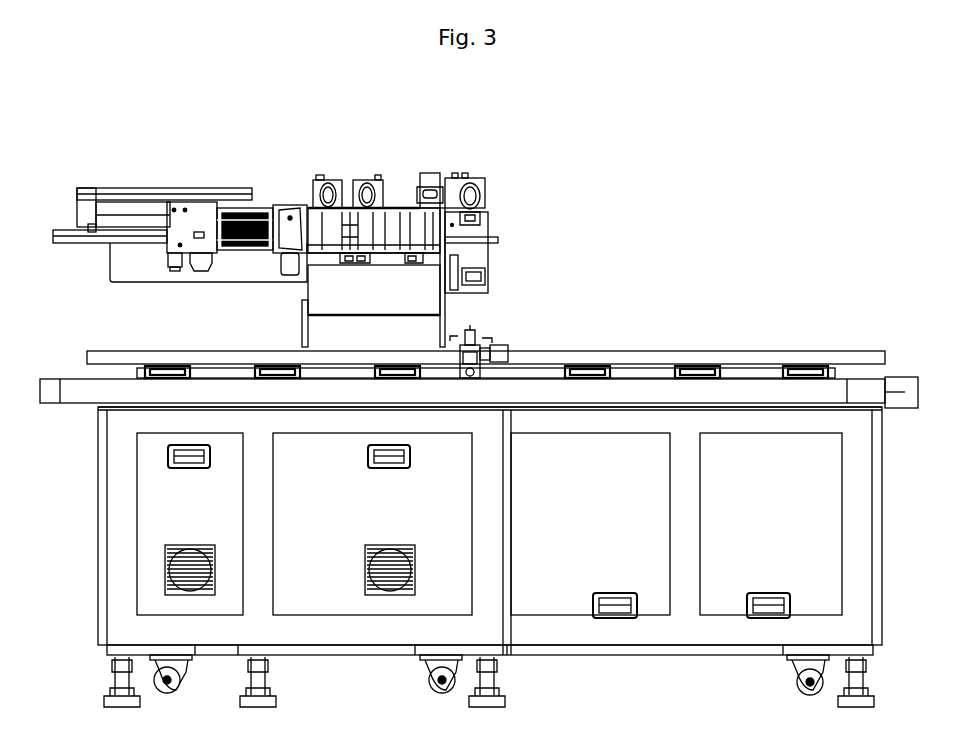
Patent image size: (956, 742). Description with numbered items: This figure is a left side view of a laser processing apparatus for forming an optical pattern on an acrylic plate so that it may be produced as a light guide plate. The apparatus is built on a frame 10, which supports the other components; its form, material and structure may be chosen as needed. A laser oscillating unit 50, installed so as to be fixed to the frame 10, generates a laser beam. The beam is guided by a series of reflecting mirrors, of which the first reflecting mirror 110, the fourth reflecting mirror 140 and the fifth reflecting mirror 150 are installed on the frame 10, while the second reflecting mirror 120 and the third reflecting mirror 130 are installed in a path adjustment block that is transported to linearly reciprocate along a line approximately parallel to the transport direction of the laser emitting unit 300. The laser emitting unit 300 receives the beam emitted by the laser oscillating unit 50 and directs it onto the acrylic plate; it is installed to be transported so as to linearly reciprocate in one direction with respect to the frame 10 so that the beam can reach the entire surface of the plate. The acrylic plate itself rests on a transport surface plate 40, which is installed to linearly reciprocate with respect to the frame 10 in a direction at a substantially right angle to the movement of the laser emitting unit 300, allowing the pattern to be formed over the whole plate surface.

The frame 10 is at (310, 293).
The transport surface plate 40 is at (752, 354).
The laser oscillating unit 50 is at (184, 195).
The first reflecting mirror 110 is at (330, 185).
The second reflecting mirror 120 is at (328, 195).
The fourth reflecting mirror 140 is at (367, 185).
The third reflecting mirror 130 is at (367, 195).
The fifth reflecting mirror 150 is at (472, 190).
The laser emitting unit 300 is at (489, 257).